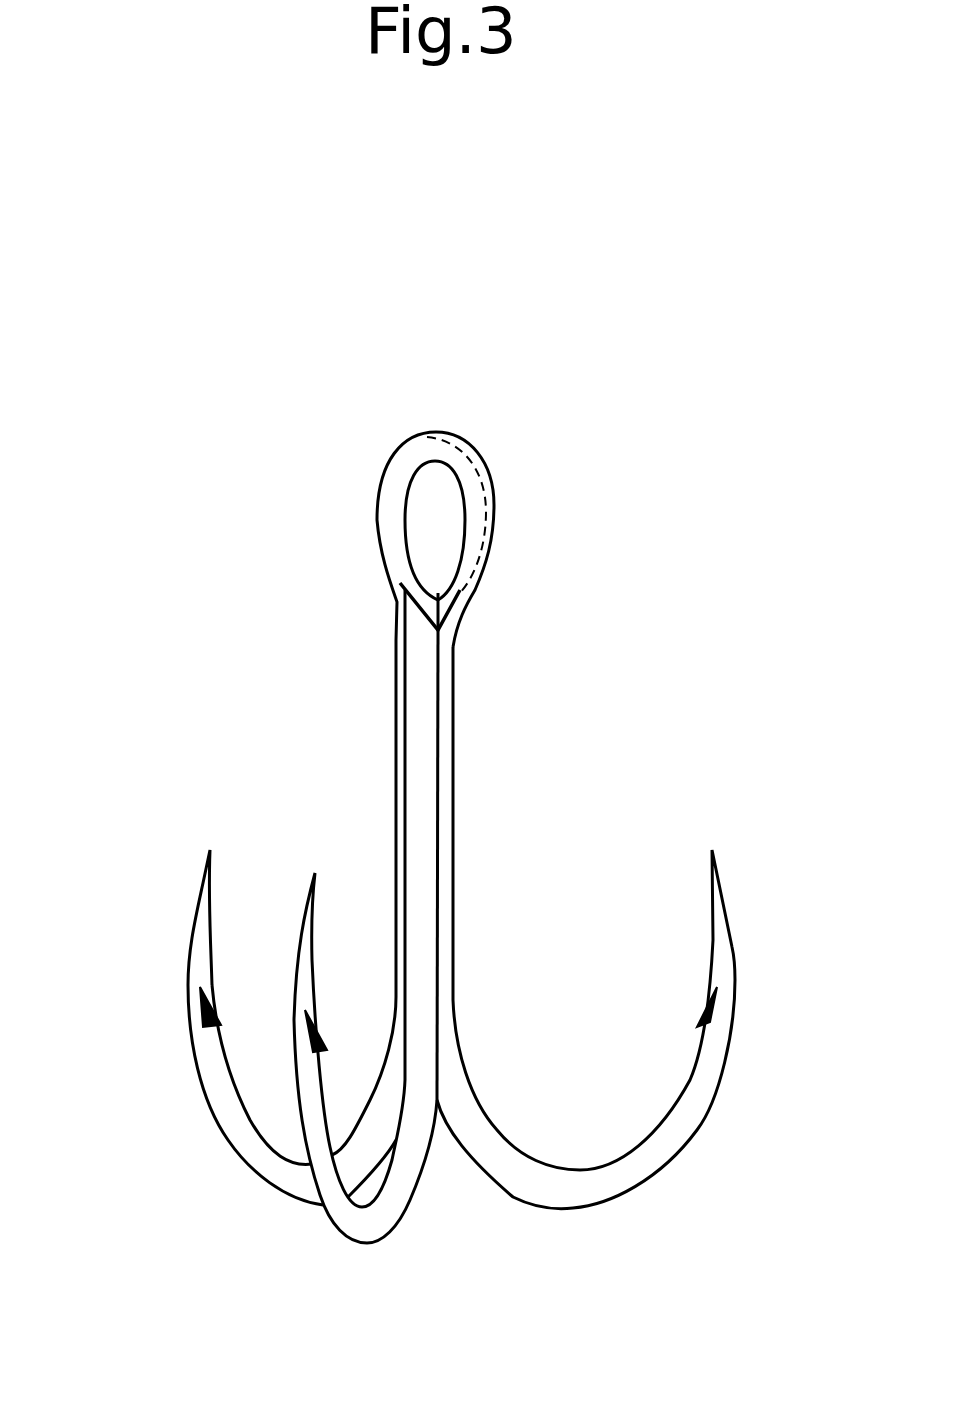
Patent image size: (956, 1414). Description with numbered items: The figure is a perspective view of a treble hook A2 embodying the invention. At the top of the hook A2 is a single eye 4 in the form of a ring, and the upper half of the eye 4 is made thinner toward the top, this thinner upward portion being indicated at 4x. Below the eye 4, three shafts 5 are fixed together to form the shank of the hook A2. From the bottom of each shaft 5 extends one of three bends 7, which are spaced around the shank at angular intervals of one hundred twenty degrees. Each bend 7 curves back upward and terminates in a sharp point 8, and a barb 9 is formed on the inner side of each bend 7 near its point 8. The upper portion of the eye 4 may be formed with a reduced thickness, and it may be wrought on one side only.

The eye 4 is at (452, 453).
The thinner upper half of the eye 4x is at (423, 452).
The shaft 5 is at (397, 727).
The bend 7 is at (263, 1173).
The point 8 is at (208, 850).
The barb 9 is at (221, 1026).
The treble hook A2 is at (478, 783).